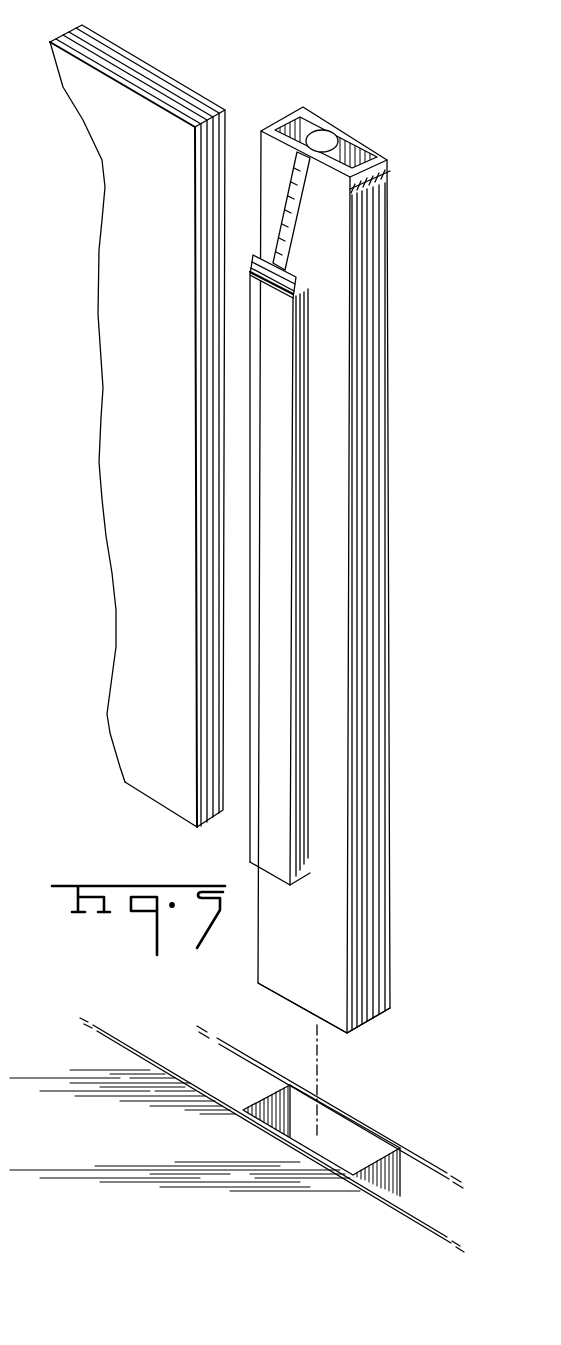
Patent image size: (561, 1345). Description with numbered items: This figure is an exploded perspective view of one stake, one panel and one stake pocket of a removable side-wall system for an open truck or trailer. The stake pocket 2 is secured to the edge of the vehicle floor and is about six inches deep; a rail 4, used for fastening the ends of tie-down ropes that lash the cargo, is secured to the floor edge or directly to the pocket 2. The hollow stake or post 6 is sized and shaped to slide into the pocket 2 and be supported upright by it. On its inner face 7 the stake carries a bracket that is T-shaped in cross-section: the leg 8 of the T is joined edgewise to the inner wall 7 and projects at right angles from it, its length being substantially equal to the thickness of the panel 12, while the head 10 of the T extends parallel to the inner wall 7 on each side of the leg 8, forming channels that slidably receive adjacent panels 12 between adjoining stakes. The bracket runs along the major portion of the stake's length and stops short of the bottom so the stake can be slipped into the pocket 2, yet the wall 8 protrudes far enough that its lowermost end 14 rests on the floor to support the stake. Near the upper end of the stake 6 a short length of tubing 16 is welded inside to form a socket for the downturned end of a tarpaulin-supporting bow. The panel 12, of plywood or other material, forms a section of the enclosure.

The stake pocket 2 is at (334, 1143).
The rail 4 is at (420, 1151).
The stake 6 is at (395, 525).
The inner face of the stake 7 is at (303, 956).
The leg of the T-shaped bracket 8 is at (302, 251).
The head of the T-shaped bracket 10 is at (263, 842).
The panel 12 is at (130, 750).
The lowermost end of the bracket wall 14 is at (275, 882).
The tubing 16 is at (345, 153).